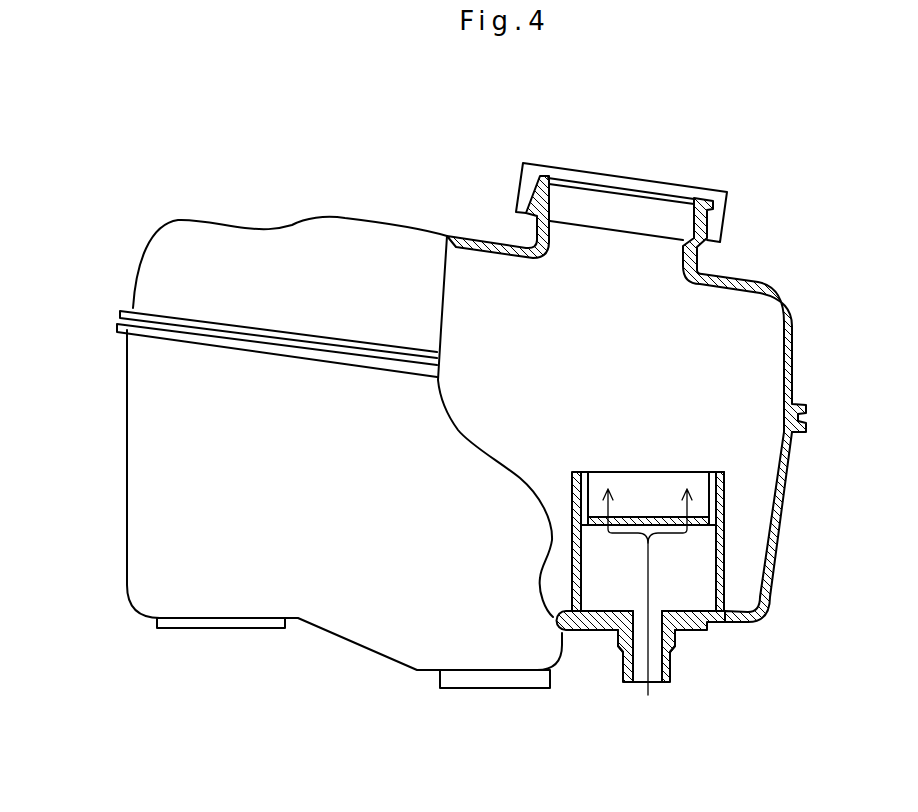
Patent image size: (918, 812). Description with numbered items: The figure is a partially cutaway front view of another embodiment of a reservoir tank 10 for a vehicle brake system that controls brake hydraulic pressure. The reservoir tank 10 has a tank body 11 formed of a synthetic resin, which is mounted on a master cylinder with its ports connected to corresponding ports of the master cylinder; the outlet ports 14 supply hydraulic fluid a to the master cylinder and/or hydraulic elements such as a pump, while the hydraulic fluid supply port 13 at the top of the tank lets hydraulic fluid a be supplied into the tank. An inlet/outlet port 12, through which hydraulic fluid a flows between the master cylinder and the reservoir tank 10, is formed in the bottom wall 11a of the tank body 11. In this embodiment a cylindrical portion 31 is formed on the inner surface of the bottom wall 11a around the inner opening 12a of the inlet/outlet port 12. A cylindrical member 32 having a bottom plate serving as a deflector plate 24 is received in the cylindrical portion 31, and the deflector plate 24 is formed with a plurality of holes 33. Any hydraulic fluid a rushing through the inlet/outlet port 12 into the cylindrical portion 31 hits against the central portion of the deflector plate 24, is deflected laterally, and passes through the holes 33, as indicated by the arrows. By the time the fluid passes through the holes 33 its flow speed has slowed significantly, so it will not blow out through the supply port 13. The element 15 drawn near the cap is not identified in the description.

The reservoir tank 10 is at (114, 431).
The tank body 11 is at (191, 240).
The bottom wall 11a is at (703, 626).
The inlet/outlet port 12 is at (648, 688).
The inner opening 12a is at (610, 643).
The hydraulic fluid supply port 13 is at (566, 203).
The outlet port 14 is at (208, 628).
The seal member 15 is at (700, 200).
The deflector plate 24 is at (697, 513).
The cylindrical portion 31 is at (722, 544).
The cylindrical member 32 is at (591, 485).
The holes 33 is at (618, 518).
The hydraulic fluid a is at (650, 583).